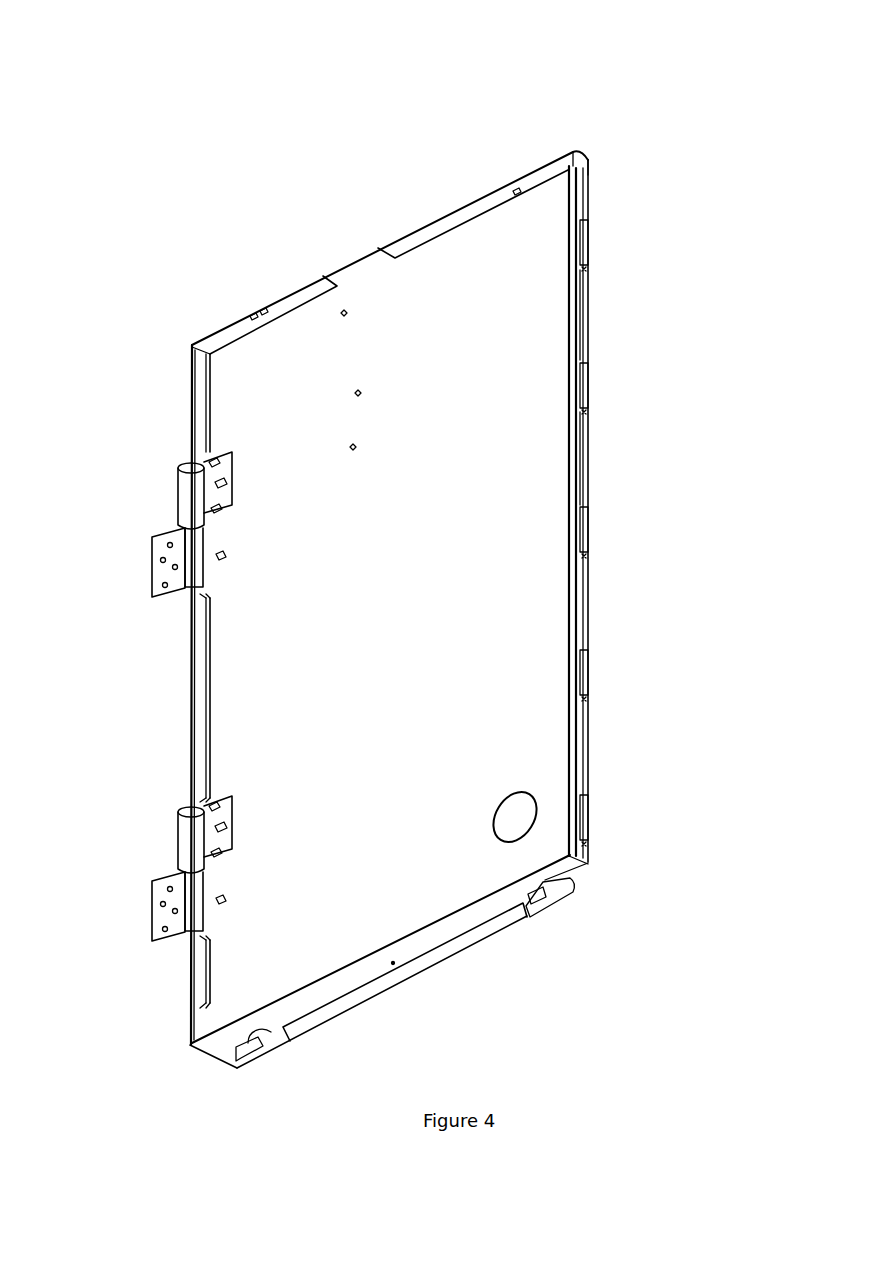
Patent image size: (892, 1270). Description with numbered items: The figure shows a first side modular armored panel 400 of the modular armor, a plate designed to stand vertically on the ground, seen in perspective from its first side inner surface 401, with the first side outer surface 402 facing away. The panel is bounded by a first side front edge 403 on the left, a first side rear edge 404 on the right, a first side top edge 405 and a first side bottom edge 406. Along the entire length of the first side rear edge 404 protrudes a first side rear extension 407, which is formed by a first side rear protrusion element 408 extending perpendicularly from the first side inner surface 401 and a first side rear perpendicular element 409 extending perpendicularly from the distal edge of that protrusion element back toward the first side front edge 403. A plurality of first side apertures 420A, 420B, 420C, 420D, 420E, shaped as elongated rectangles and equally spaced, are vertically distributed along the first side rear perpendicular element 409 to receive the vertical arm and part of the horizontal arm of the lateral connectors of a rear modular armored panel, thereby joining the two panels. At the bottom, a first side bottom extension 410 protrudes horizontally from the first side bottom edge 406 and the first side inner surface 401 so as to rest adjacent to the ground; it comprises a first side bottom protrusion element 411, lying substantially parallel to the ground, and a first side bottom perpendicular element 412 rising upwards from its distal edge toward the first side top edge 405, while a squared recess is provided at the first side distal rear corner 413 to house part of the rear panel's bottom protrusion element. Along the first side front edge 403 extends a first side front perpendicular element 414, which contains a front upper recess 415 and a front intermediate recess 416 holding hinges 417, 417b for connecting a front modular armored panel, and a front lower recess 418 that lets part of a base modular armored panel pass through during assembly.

The first side modular armored panel 400 is at (172, 180).
The first side inner surface 401 is at (489, 250).
The first side outer surface 402 is at (408, 202).
The first side front edge 403 is at (200, 615).
The first side rear edge 404 is at (594, 622).
The first side top edge 405 is at (490, 190).
The first side bottom edge 406 is at (227, 1032).
The first side rear extension 407 is at (596, 142).
The first side rear protrusion element 408 is at (588, 300).
The first side rear perpendicular element 409 is at (588, 468).
The first side bottom extension 410 is at (204, 1060).
The first side bottom protrusion element 411 is at (218, 1060).
The first side bottom perpendicular element 412 is at (393, 963).
The first side distal rear corner 413 is at (578, 888).
The first side front perpendicular element 414 is at (205, 683).
The front upper recess 415 is at (190, 460).
The front intermediate recess 416 is at (190, 805).
The hinge 417 is at (185, 505).
The hinge 417b is at (185, 850).
The front lower recess 418 is at (191, 1004).
The first side aperture 420A is at (588, 240).
The first side aperture 420B is at (588, 395).
The first side aperture 420C is at (588, 540).
The first side aperture 420D is at (588, 690).
The first side aperture 420E is at (588, 830).